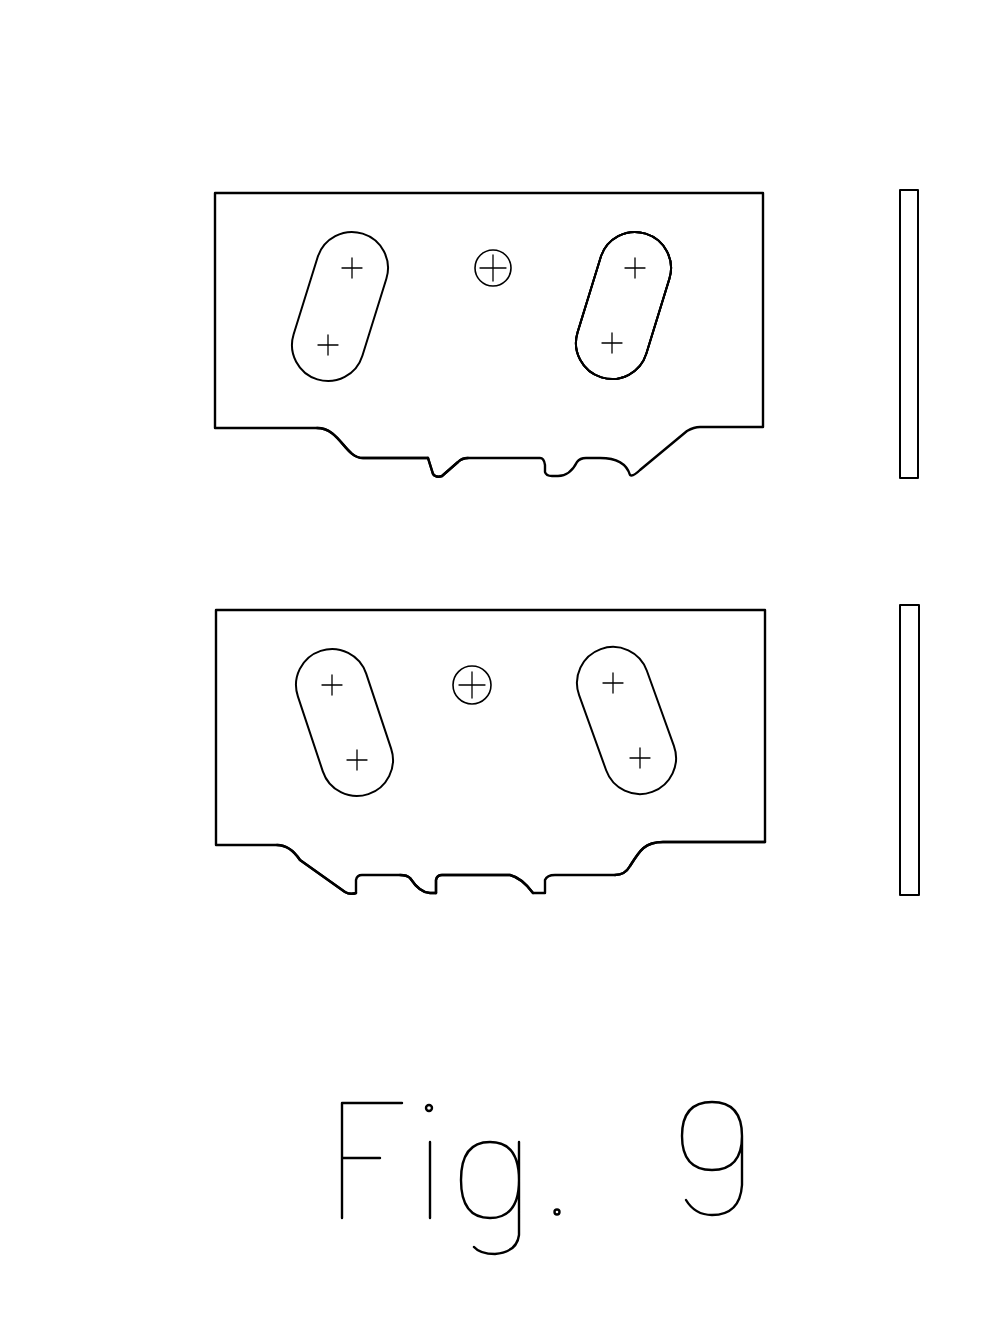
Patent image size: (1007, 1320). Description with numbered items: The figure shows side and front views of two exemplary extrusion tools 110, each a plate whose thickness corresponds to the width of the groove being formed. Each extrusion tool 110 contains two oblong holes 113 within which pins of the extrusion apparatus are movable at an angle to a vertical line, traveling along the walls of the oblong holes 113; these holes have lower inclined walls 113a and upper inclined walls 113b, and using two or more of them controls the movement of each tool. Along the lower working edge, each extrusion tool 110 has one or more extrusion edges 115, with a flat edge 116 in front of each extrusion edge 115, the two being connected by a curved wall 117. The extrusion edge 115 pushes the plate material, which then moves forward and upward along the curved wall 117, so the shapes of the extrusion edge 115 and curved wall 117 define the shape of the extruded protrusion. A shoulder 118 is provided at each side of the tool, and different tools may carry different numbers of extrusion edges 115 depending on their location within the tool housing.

The extrusion tool 110 is at (567, 447).
The oblong holes 113 is at (635, 968).
The lower inclined walls 113a is at (803, 290).
The upper inclined walls 113b is at (598, 262).
The extrusion edge 115 is at (392, 1027).
The flat edge 116 is at (543, 1026).
The curved wall 117 is at (353, 873).
The shoulder 118 is at (767, 898).